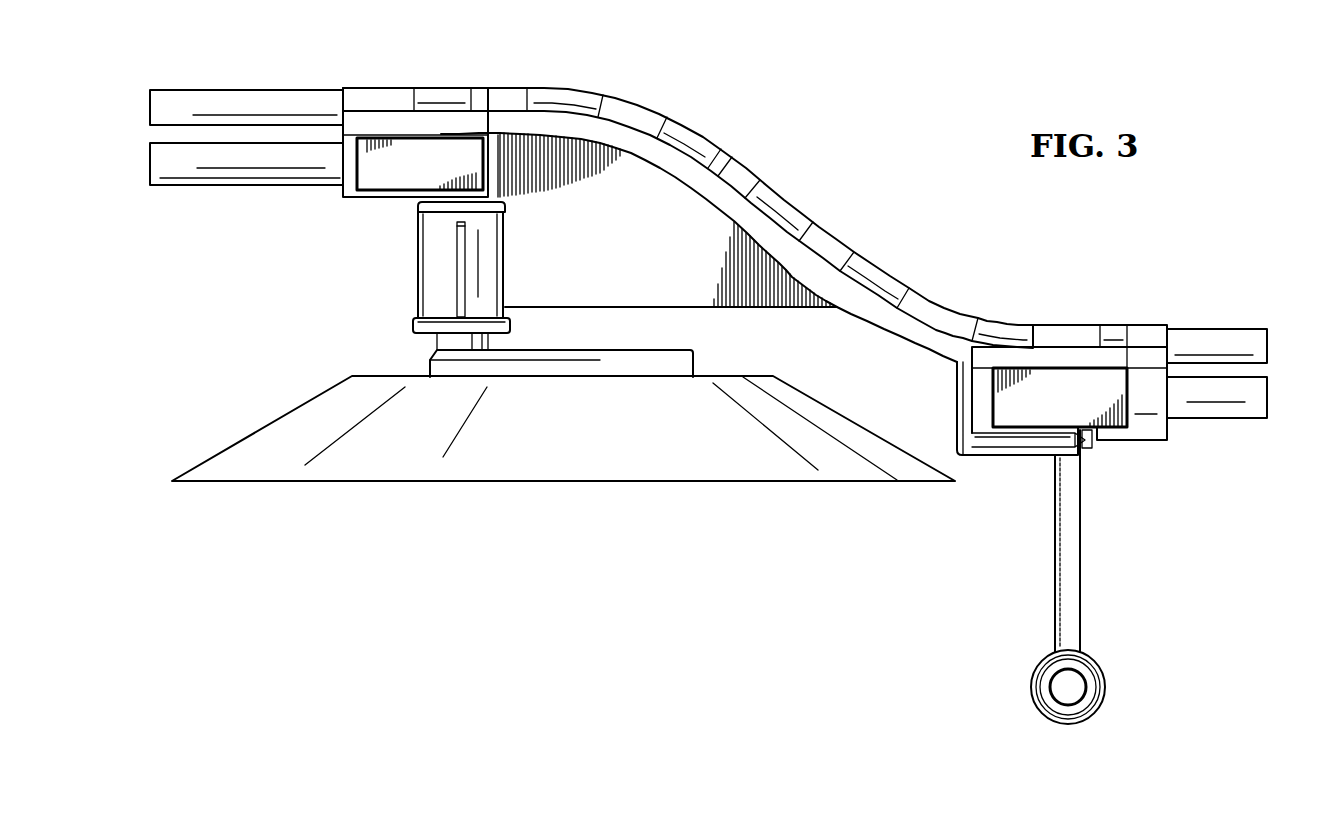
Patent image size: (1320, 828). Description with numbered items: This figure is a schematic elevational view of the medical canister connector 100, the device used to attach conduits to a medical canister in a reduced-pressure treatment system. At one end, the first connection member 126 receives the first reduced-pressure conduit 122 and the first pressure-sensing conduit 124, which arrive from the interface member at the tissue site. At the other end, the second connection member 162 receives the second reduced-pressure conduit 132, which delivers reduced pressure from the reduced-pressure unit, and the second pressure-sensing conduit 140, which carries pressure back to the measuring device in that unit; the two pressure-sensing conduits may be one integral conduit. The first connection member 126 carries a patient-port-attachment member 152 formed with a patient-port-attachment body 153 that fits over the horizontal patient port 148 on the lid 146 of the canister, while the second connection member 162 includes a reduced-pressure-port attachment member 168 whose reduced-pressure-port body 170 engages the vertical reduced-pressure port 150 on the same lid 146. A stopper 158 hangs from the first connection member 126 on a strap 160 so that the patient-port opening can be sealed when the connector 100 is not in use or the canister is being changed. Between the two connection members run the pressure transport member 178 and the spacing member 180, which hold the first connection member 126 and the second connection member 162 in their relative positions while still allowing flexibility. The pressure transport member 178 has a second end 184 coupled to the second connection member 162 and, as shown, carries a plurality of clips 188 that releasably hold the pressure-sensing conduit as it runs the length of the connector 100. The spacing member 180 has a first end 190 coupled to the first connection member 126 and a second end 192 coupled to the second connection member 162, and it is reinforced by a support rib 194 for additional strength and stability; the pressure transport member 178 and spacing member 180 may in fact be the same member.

The medical canister connector 100 is at (405, 278).
The first reduced-pressure conduit 122 is at (1229, 420).
The first pressure-sensing conduit 124 is at (1232, 328).
The first connection member 126 is at (1158, 443).
The second reduced-pressure conduit 132 is at (236, 186).
The second pressure-sensing conduit 140 is at (240, 88).
The lid 146 is at (522, 462).
The patient port 148 is at (836, 376).
The reduced-pressure port 150 is at (437, 341).
The patient-port-attachment member 152 is at (1017, 458).
The patient-port-attachment body 153 is at (1125, 443).
The stopper 158 is at (1107, 685).
The strap 160 is at (1082, 583).
The second connection member 162 is at (437, 190).
The reduced-pressure-port attachment member 168 is at (413, 306).
The reduced-pressure-port body 170 is at (415, 257).
The pressure transport member 178 is at (638, 102).
The spacing member 180 is at (731, 190).
The second end 184 is at (401, 87).
The clips 188 is at (493, 86).
The first end 190 is at (1073, 358).
The second end 192 is at (373, 120).
The support rib 194 is at (634, 240).